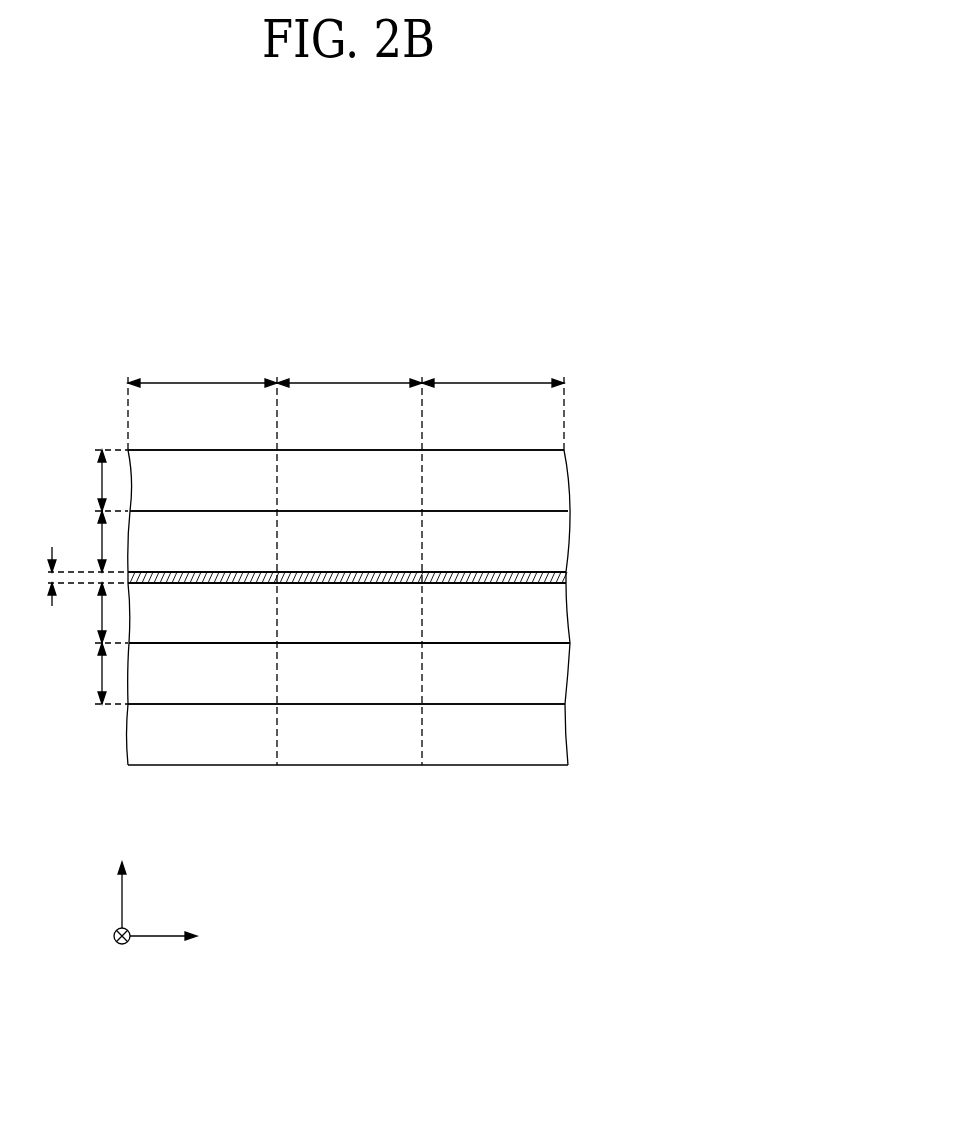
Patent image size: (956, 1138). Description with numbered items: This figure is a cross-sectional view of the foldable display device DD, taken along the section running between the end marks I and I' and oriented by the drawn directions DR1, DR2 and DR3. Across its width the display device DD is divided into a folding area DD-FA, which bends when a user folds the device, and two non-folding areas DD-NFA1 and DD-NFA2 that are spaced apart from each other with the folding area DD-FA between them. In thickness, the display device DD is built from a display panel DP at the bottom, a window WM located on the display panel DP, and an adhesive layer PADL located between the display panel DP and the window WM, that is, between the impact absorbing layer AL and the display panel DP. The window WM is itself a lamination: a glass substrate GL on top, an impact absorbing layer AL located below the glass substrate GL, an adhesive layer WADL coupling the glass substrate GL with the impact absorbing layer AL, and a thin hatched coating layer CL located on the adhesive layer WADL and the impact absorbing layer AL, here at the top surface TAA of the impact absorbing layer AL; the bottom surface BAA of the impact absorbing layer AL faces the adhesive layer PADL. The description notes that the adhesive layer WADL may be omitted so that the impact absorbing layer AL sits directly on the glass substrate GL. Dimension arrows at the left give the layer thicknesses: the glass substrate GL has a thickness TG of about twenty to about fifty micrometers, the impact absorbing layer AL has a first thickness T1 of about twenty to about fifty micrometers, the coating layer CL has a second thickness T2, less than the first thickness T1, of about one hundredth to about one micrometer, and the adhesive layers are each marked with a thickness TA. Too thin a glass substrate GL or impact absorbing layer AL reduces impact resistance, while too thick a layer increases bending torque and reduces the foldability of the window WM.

The display device DD is at (605, 335).
The first non-folding area DD-NFA1 is at (202, 369).
The folding area DD-FA is at (349, 369).
The second non-folding area DD-NFA2 is at (493, 369).
The glass substrate GL is at (555, 477).
The adhesive layer WADL is at (562, 537).
The coating layer CL is at (565, 573).
The impact absorbing layer AL is at (555, 612).
The bottom surface BAA is at (520, 648).
The adhesive layer PADL is at (563, 687).
The display panel DP is at (555, 747).
The window WM is at (671, 465).
The top surface TAA is at (498, 566).
The thickness of glass substrate TG is at (101, 480).
The thickness of adhesive layer TA is at (101, 607).
The first thickness T1 is at (90, 613).
The second thickness T2 is at (76, 576).
The section line start I is at (129, 783).
The section line end I' is at (569, 783).
The first direction DR1 is at (123, 951).
The second direction DR2 is at (184, 937).
The third direction DR3 is at (123, 883).